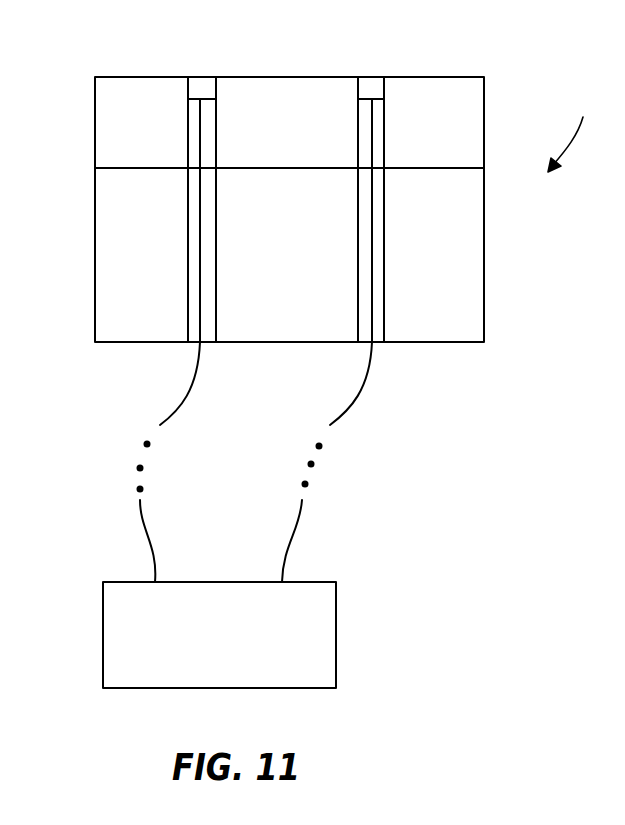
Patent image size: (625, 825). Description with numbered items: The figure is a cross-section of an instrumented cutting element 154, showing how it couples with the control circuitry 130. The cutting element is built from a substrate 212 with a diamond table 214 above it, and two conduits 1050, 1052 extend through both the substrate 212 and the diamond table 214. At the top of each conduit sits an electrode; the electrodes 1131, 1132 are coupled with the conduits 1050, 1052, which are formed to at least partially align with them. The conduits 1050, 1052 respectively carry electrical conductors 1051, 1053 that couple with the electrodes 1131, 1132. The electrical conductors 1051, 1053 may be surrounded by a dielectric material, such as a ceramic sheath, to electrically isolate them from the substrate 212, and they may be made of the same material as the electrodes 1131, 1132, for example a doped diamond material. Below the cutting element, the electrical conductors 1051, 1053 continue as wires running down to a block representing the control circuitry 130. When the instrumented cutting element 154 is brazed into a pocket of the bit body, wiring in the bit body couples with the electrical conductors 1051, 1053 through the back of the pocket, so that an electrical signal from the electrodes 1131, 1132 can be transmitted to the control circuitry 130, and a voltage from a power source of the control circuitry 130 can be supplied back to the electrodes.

The instrumented cutting element 154 is at (577, 132).
The diamond table 214 is at (100, 122).
The substrate 212 is at (100, 281).
The conduit 1050 is at (208, 228).
The conduit 1052 is at (377, 231).
The electrode 1131 is at (201, 84).
The electrode 1132 is at (372, 84).
The electrical conductor 1051 is at (197, 380).
The electrical conductor 1053 is at (367, 380).
The control circuitry 130 is at (336, 640).